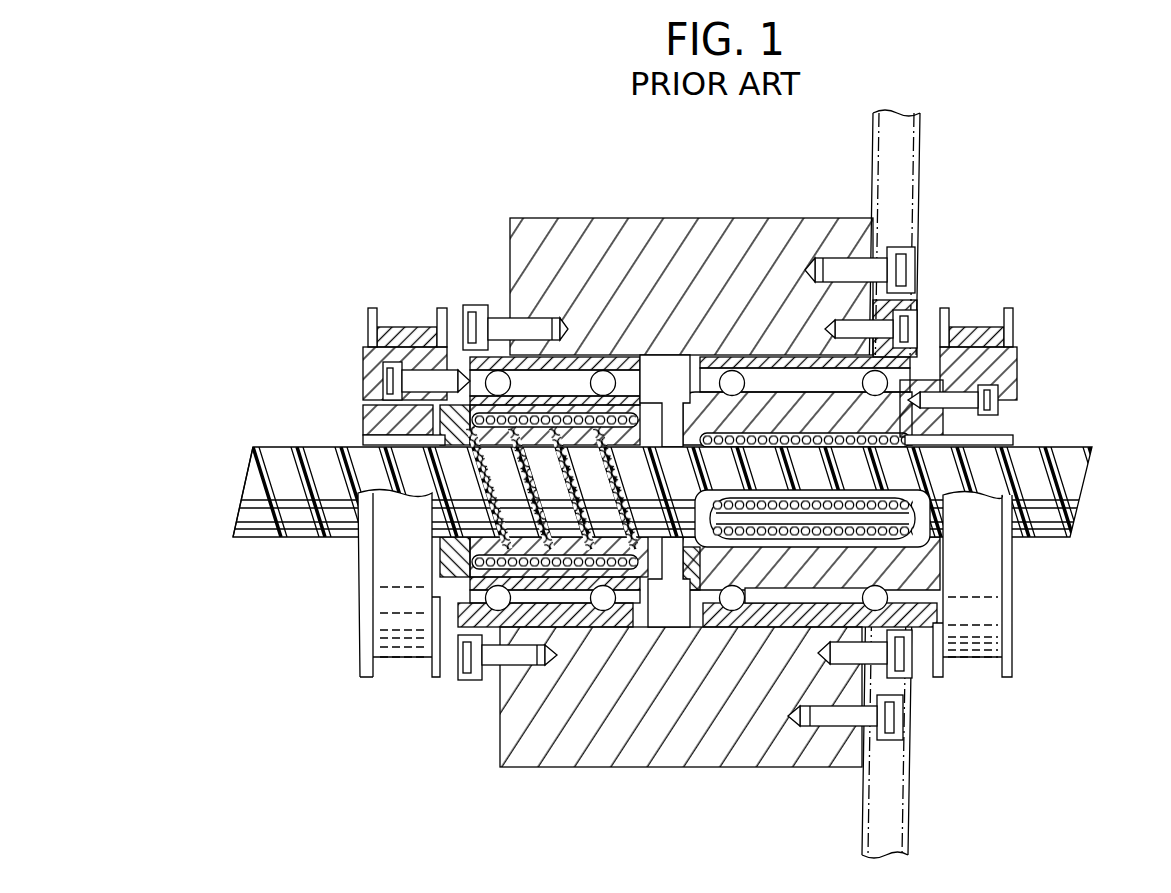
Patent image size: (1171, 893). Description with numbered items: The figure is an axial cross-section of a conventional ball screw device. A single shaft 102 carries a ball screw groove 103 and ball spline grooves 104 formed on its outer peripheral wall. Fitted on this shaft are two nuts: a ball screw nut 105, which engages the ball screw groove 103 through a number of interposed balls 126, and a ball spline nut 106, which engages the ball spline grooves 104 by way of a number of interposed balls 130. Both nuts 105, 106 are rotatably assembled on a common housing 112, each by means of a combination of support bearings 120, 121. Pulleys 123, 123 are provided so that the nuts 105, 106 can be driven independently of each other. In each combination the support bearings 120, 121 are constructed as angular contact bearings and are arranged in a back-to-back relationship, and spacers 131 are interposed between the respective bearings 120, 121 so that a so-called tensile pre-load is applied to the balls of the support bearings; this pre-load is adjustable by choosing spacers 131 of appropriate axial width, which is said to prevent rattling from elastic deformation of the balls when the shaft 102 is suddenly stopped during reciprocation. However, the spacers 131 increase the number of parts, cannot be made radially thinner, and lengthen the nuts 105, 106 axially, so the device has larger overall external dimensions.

The shaft 102 is at (1090, 455).
The ball screw groove 103 is at (253, 463).
The ball spline grooves 104 is at (238, 522).
The ball screw nut 105 is at (700, 360).
The ball spline nut 106 is at (690, 372).
The housing 112 is at (803, 764).
The support bearing 120 is at (458, 628).
The support bearing 121 is at (595, 630).
The pulleys 123 is at (396, 322).
The balls 126 is at (563, 566).
The balls 130 is at (940, 622).
The spacers 131 is at (568, 360).